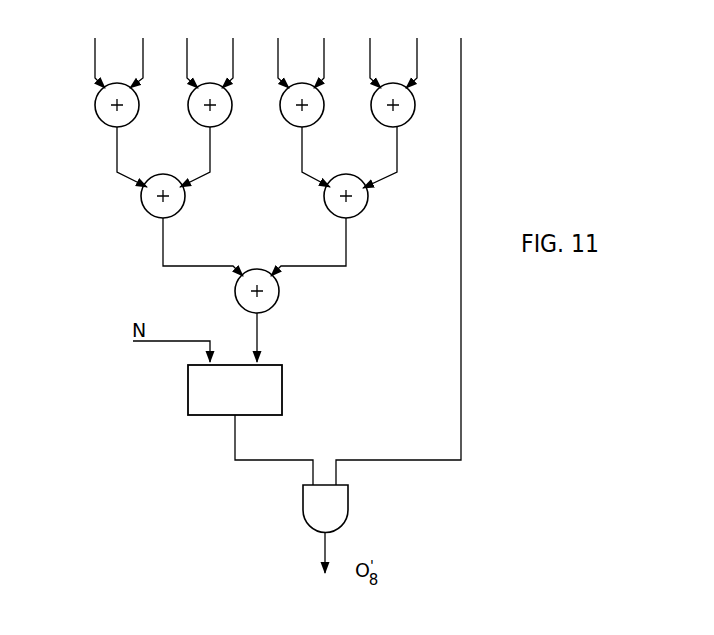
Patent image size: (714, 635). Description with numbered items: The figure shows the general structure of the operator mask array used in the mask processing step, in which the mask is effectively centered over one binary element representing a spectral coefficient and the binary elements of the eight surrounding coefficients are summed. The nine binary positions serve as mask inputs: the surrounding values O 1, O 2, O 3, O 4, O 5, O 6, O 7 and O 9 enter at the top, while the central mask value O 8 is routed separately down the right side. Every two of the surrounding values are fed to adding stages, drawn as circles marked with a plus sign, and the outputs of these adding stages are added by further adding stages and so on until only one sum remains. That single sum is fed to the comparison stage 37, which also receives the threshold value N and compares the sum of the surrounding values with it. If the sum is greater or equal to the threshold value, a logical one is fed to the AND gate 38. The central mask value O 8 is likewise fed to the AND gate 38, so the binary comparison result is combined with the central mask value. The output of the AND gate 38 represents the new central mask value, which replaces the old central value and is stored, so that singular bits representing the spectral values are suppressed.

The comparison stage 37 is at (282, 393).
The AND gate 38 is at (348, 508).
The input signal O1 1 is at (88, 51).
The input signal O2 2 is at (130, 51).
The input signal O3 3 is at (180, 51).
The input signal O4 4 is at (220, 51).
The input signal O5 5 is at (272, 51).
The input signal O6 6 is at (312, 51).
The input signal O7 7 is at (363, 51).
The input signal O8 8 is at (399, 249).
The input signal O9 9 is at (405, 51).